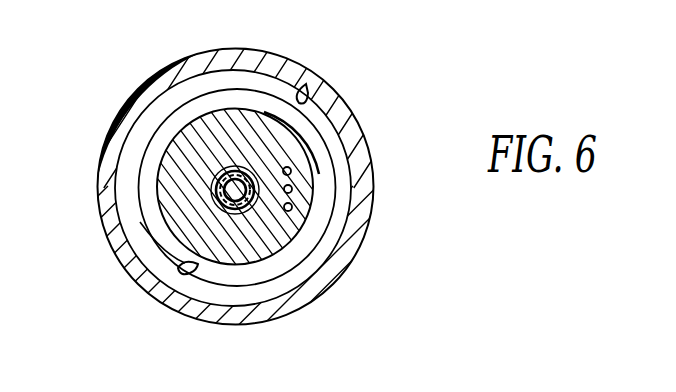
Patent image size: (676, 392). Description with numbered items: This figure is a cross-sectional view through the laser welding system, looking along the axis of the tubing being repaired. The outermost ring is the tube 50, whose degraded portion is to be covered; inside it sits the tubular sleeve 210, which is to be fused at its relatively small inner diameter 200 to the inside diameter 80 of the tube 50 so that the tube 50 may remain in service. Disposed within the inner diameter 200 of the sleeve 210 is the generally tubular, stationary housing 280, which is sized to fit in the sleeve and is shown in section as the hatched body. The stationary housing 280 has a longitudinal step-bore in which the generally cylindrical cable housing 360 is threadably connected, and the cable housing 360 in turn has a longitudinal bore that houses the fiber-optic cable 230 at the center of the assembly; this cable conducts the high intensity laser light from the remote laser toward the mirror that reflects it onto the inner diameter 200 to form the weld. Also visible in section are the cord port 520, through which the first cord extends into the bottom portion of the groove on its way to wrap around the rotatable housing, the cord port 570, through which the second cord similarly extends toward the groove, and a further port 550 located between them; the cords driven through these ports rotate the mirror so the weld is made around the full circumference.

The tube 50 is at (334, 280).
The tubular sleeve 210 is at (263, 293).
The stationary housing 280 is at (250, 112).
The inside diameter of tube 80 is at (303, 93).
The inner diameter of sleeve 200 is at (178, 272).
The cable housing 360 is at (213, 188).
The fiber-optic cable 230 is at (237, 191).
The cord port 520 is at (291, 171).
The second channel 550 is at (292, 189).
The cord port 570 is at (292, 207).